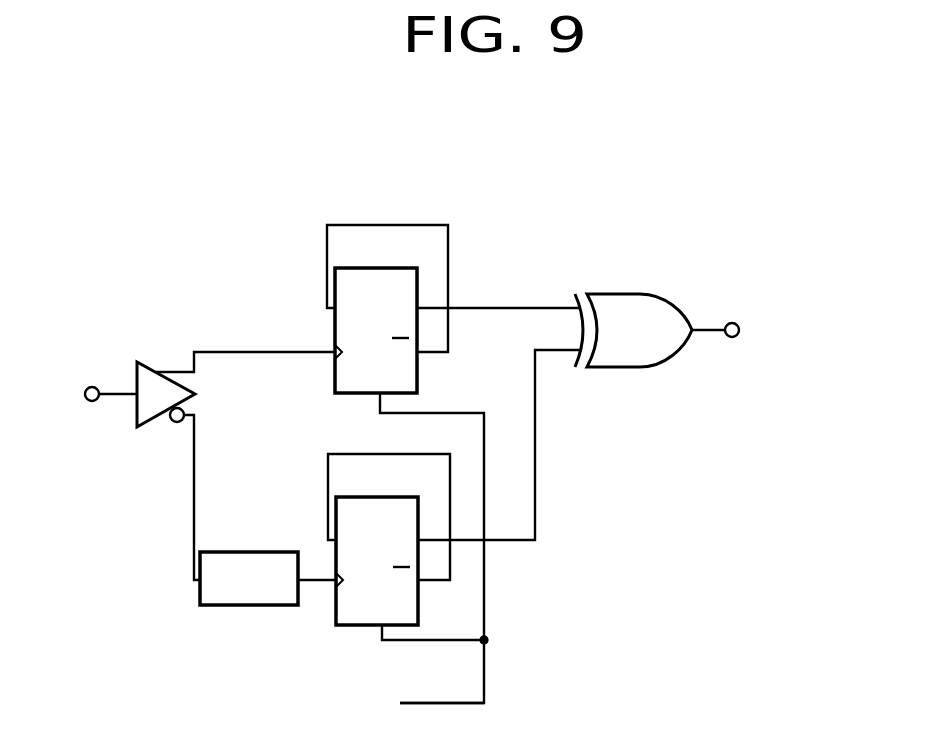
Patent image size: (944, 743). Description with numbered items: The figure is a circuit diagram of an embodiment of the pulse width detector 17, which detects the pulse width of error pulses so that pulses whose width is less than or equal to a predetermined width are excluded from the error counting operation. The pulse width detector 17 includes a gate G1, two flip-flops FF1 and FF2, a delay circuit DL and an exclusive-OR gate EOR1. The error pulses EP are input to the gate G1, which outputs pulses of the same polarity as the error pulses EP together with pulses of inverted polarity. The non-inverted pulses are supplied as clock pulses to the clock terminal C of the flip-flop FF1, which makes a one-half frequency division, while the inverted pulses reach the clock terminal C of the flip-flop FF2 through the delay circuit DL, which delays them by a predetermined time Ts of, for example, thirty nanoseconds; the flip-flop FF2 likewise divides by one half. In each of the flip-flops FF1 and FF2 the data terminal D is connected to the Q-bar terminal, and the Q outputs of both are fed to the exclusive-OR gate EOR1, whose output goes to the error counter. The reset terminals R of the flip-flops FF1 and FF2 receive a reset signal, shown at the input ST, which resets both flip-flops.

The error pulses EP is at (91, 394).
The gate G1 is at (149, 362).
The pulse width detector 17 is at (284, 422).
The flip-flop FF1 is at (342, 268).
The flip-flop FF2 is at (343, 497).
The delay circuit DL is at (232, 552).
The exclusive-OR gate EOR1 is at (652, 366).
The reset/start signal input ST is at (421, 704).